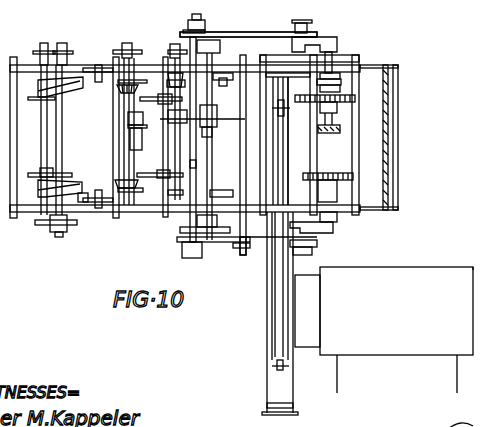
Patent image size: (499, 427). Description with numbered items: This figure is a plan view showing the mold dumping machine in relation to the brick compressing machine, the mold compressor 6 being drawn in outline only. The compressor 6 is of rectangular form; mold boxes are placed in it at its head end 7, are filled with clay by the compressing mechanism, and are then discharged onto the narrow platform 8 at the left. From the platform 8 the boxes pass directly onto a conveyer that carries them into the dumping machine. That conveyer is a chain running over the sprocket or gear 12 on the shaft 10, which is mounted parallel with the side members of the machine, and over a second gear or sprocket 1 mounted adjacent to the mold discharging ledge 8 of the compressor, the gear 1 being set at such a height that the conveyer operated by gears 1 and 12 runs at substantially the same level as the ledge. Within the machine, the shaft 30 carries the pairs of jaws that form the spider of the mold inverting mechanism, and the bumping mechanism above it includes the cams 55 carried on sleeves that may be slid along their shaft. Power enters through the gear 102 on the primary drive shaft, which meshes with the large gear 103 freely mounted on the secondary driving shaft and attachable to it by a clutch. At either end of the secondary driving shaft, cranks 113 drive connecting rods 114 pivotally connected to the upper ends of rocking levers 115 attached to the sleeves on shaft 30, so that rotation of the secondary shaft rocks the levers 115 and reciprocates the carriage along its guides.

The gear or sprocket 1 is at (280, 368).
The mold compressor 6 is at (396, 330).
The head end 7 is at (474, 268).
The platform or ledge 8 is at (305, 286).
The shaft 10 is at (301, 141).
The sprocket or gear 12 is at (282, 102).
The shaft 30 is at (205, 134).
The cam 55 is at (75, 90).
The gear 102 is at (325, 103).
The large gear 103 is at (355, 98).
The crank 113 is at (320, 42).
The connecting rod 114 is at (248, 29).
The rocking lever 115 is at (210, 42).